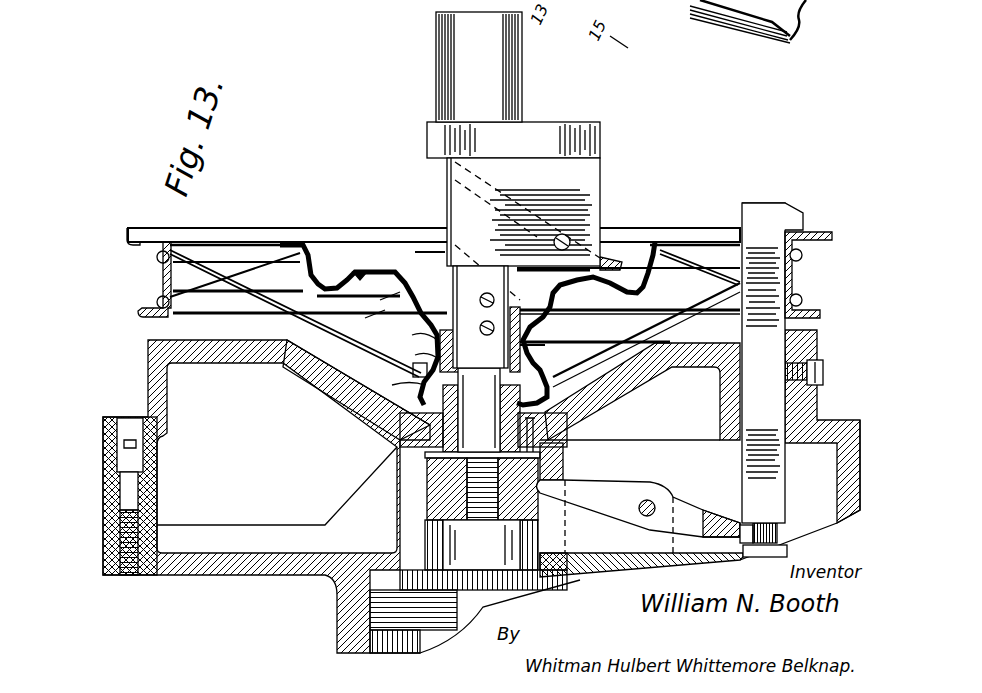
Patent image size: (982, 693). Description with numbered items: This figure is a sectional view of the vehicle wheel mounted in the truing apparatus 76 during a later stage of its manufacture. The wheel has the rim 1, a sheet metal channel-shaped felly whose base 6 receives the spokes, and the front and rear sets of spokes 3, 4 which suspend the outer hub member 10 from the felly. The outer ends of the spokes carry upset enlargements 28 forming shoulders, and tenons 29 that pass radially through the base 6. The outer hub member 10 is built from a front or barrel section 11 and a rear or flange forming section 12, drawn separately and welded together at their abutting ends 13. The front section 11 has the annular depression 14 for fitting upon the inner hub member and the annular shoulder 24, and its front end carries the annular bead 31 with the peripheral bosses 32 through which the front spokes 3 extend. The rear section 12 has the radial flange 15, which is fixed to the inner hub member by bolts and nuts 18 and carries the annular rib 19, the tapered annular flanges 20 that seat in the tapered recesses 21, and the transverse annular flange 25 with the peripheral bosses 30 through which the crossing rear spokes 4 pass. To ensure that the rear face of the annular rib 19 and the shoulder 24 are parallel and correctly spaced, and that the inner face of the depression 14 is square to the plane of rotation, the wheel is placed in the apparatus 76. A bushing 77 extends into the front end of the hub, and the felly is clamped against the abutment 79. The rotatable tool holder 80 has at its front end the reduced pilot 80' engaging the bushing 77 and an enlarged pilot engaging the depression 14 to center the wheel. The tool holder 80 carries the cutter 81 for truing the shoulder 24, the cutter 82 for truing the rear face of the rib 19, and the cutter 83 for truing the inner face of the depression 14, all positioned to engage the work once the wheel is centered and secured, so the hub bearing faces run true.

The rim 1 is at (180, 228).
The front set of spokes 3 is at (713, 228).
The rear set of spokes 4 is at (694, 228).
The base of the felly 6 is at (163, 280).
The outer hub member 10 is at (397, 381).
The front or barrel section 11 is at (417, 355).
The rear or flange forming section 12 is at (413, 228).
The welded joint 13 is at (379, 301).
The annular depression 14 is at (412, 326).
The radial flange 15 is at (348, 228).
The nuts 18 is at (762, 226).
The annular rib 19 is at (322, 228).
The tapered annular flanges 20 is at (373, 228).
The recesses 21 is at (298, 313).
The annular shoulder 24 is at (364, 324).
The transverse annular flange 25 is at (642, 228).
The enlargements 28 is at (150, 228).
The tenons 29 is at (800, 292).
The peripheral bosses 30 is at (265, 228).
The annular bead 31 is at (560, 378).
The peripheral bosses 32 is at (550, 348).
The apparatus 76 is at (228, 575).
The bushing 77 is at (481, 469).
The abutment 79 is at (818, 325).
The tool holder 80 is at (480, 85).
The reduced pilot 80' is at (562, 489).
The cutter 81 is at (480, 290).
The cutter 82 is at (523, 212).
The cutter 83 is at (521, 231).